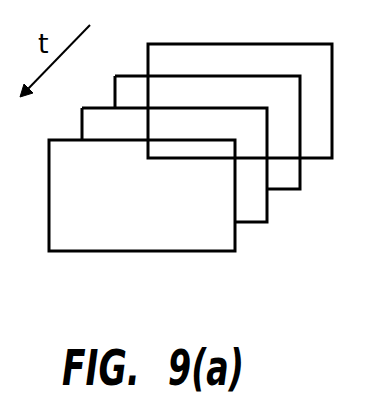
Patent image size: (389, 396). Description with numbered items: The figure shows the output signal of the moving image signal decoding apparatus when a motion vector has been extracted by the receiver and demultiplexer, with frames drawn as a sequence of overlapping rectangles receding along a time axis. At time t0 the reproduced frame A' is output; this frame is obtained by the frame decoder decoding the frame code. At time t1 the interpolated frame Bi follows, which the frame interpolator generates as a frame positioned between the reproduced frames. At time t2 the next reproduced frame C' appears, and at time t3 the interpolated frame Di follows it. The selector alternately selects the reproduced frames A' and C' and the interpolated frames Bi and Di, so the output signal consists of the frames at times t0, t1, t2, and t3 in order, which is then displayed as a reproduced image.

The time t0 is at (243, 118).
The time t1 is at (212, 155).
The time t2 is at (177, 186).
The time t3 is at (147, 220).
The reproduced frame A' is at (258, 126).
The interpolated frame Bi is at (302, 180).
The reproduced frame C' is at (191, 197).
The interpolated frame Di is at (237, 245).